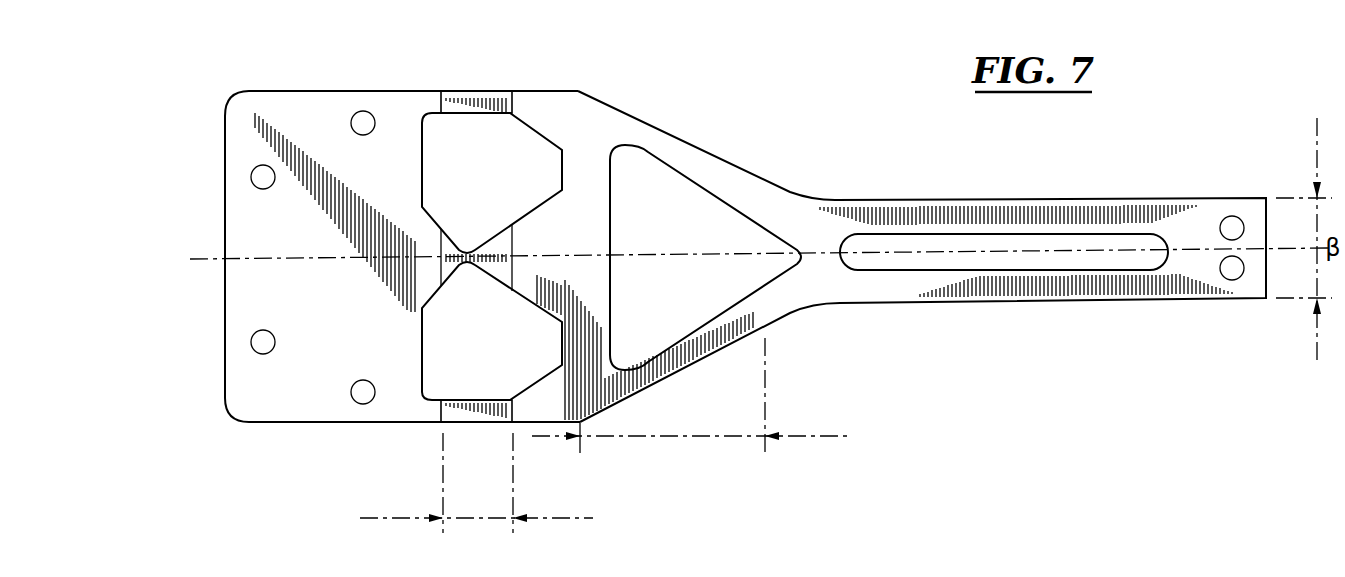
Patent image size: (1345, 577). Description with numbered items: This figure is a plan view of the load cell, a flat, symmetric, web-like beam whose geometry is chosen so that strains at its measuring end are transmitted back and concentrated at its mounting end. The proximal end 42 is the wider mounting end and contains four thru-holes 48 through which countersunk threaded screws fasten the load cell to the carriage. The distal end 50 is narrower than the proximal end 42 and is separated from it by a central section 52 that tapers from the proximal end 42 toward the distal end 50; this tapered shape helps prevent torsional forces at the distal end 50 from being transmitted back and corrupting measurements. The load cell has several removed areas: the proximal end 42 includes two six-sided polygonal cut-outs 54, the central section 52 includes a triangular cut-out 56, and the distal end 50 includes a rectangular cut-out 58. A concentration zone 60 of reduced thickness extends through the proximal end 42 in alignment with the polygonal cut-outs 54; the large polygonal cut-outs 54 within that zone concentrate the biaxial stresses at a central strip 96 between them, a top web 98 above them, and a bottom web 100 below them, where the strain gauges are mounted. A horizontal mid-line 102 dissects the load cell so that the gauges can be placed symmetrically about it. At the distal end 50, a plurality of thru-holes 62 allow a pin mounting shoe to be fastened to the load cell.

The proximal end 42 is at (280, 396).
The thru-holes 48 is at (375, 125).
The distal end 50 is at (1232, 198).
The central section 52 is at (643, 438).
The polygonal cut-outs 54 is at (466, 190).
The triangular cut-out 56 is at (664, 240).
The rectangular cut-out 58 is at (1048, 259).
The concentration zone 60 is at (472, 518).
The thru-holes 62 is at (1218, 230).
The central strip 96 is at (500, 248).
The top web 98 is at (458, 97).
The bottom web 100 is at (455, 422).
The mid-line 102 is at (207, 262).